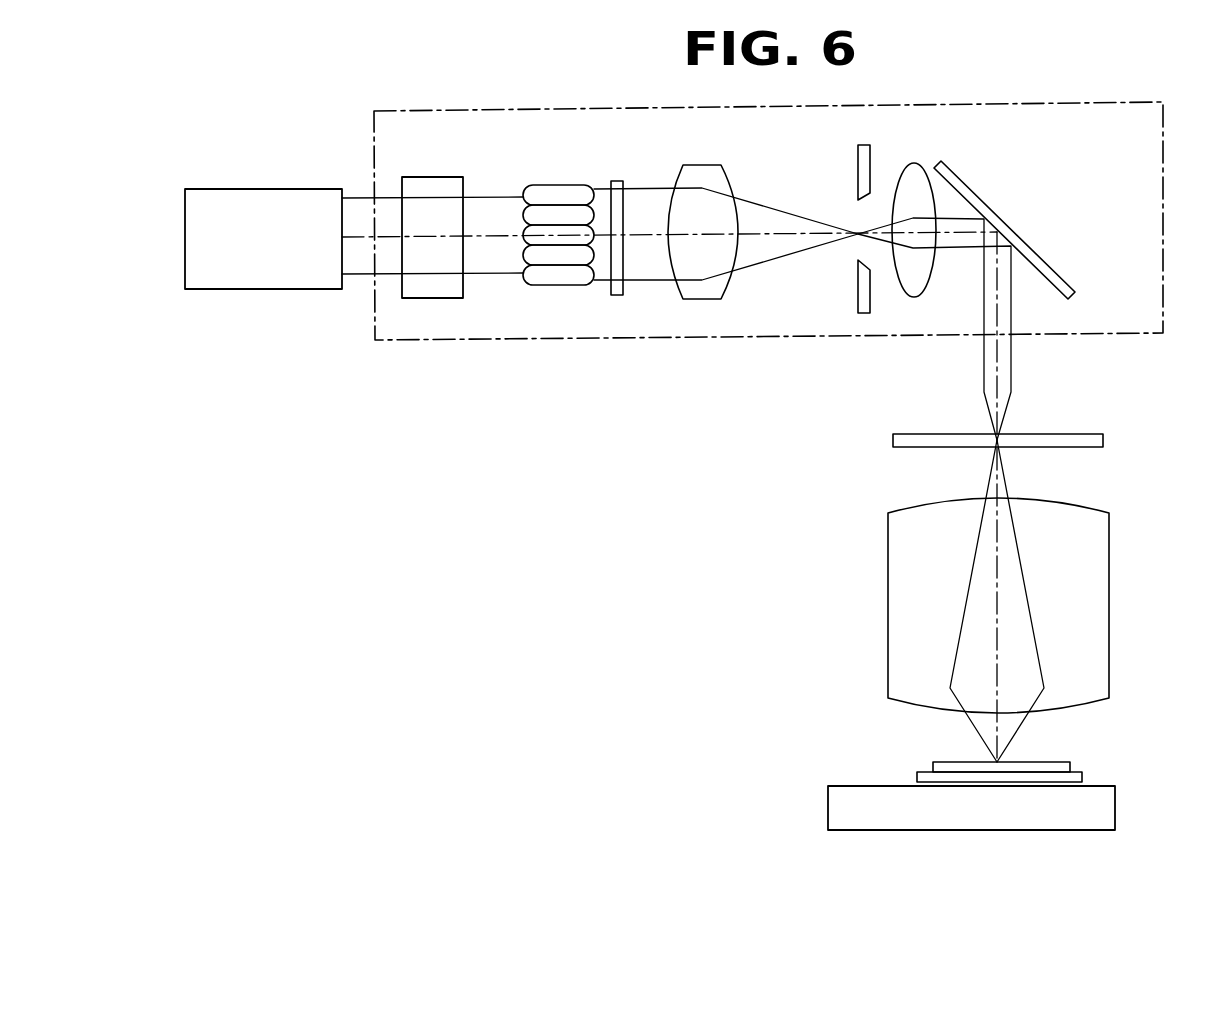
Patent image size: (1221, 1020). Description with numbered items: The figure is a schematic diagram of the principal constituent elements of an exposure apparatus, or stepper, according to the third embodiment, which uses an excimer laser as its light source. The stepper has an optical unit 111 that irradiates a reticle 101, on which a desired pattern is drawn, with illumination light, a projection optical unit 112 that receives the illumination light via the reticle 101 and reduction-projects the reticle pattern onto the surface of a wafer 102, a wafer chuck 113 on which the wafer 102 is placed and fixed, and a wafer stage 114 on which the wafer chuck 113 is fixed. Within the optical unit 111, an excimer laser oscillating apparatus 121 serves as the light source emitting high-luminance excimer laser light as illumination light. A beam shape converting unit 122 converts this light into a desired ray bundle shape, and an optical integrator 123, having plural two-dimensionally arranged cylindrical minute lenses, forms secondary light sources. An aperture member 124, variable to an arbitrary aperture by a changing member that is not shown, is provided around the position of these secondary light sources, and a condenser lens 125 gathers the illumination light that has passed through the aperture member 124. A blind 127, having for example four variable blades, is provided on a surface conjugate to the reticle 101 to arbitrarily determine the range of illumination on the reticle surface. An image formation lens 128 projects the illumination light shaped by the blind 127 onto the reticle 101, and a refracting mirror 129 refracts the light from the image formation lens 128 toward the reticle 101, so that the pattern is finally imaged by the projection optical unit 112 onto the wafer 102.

The reticle 101 is at (1103, 440).
The wafer 102 is at (1052, 762).
The optical unit 111 is at (402, 341).
The projection optical unit 112 is at (1109, 612).
The wafer chuck 113 is at (1083, 777).
The wafer stage 114 is at (828, 808).
The excimer laser oscillating apparatus 121 is at (246, 189).
The beam shape converting unit 122 is at (423, 177).
The optical integrator 123 is at (548, 185).
The aperture member 124 is at (621, 181).
The condenser lens 125 is at (707, 165).
The blind 127 is at (857, 157).
The image formation lens 128 is at (907, 163).
The refracting mirror 129 is at (1010, 172).